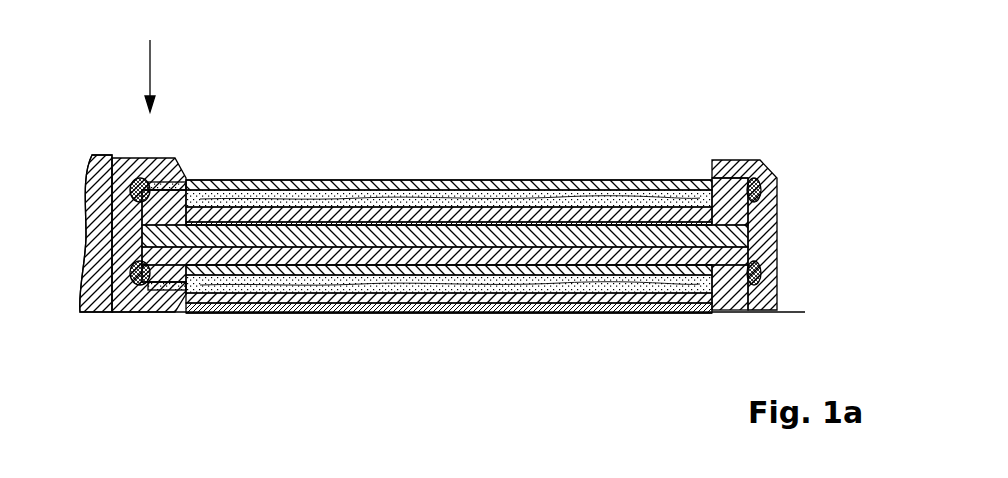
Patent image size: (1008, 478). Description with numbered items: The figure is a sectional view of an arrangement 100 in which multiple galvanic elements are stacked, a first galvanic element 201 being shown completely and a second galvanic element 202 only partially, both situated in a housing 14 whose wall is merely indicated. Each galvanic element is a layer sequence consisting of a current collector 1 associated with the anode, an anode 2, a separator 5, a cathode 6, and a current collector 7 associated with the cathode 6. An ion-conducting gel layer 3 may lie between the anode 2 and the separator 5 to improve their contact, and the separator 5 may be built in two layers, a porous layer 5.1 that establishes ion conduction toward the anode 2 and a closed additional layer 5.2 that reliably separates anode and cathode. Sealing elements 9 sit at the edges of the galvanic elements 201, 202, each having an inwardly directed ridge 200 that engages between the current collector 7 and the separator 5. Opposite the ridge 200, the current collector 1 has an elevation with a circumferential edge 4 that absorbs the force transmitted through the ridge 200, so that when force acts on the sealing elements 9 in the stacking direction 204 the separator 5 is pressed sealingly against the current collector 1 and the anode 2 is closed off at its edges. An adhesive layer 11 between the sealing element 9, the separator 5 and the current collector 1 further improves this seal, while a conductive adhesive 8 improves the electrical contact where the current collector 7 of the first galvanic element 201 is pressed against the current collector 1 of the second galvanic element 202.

The arrangement 100 is at (770, 102).
The housing 14 is at (92, 170).
The adhesive layer 11 is at (772, 180).
The circumferential edge 4 is at (175, 298).
The current collector associated with cathode 7 is at (248, 236).
The second galvanic element 202 is at (531, 237).
The first galvanic element 201 is at (531, 306).
The separator 5 is at (447, 180).
The porous layer 5.1 is at (292, 290).
The additional layer 5.2 is at (358, 285).
The conductive adhesive 8 is at (376, 200).
The cathode 6 is at (428, 290).
The current collector associated with anode 1 is at (313, 220).
The anode 2 is at (630, 230).
The ion-conducting gel layer 3 is at (582, 205).
The sealing element 9 is at (138, 182).
The ridge 200 is at (160, 172).
The stacking direction 204 is at (150, 63).